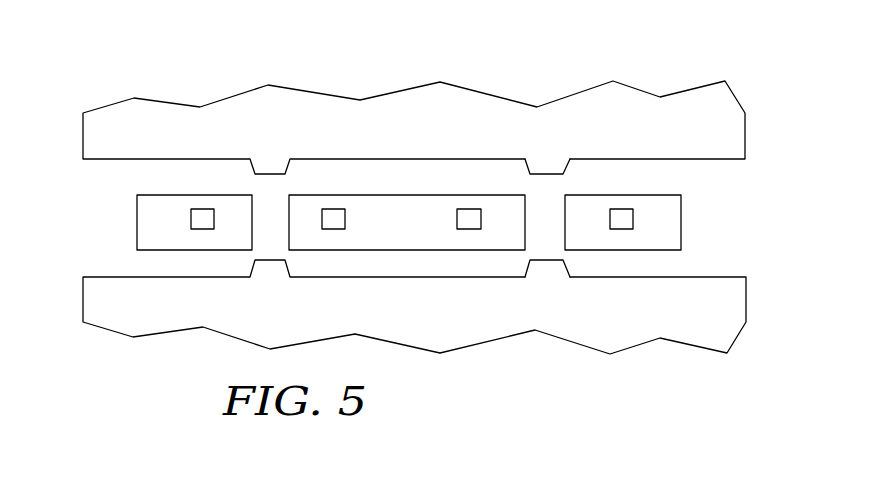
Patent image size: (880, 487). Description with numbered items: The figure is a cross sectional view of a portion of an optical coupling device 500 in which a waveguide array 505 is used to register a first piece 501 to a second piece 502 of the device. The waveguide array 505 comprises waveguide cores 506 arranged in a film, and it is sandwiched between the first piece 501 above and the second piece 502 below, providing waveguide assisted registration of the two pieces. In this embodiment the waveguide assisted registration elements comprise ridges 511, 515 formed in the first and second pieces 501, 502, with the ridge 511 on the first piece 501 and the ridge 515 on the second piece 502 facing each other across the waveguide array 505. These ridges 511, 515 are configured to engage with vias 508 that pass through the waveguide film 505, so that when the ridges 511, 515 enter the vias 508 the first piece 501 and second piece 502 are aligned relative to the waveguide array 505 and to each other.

The optical coupling device 500 is at (160, 53).
The first piece 501 is at (708, 110).
The second piece 502 is at (707, 327).
The waveguide array 505 is at (400, 193).
The waveguide core 506 is at (468, 217).
The via 508 is at (552, 222).
The ridge 511 is at (545, 165).
The ridge 515 is at (547, 270).